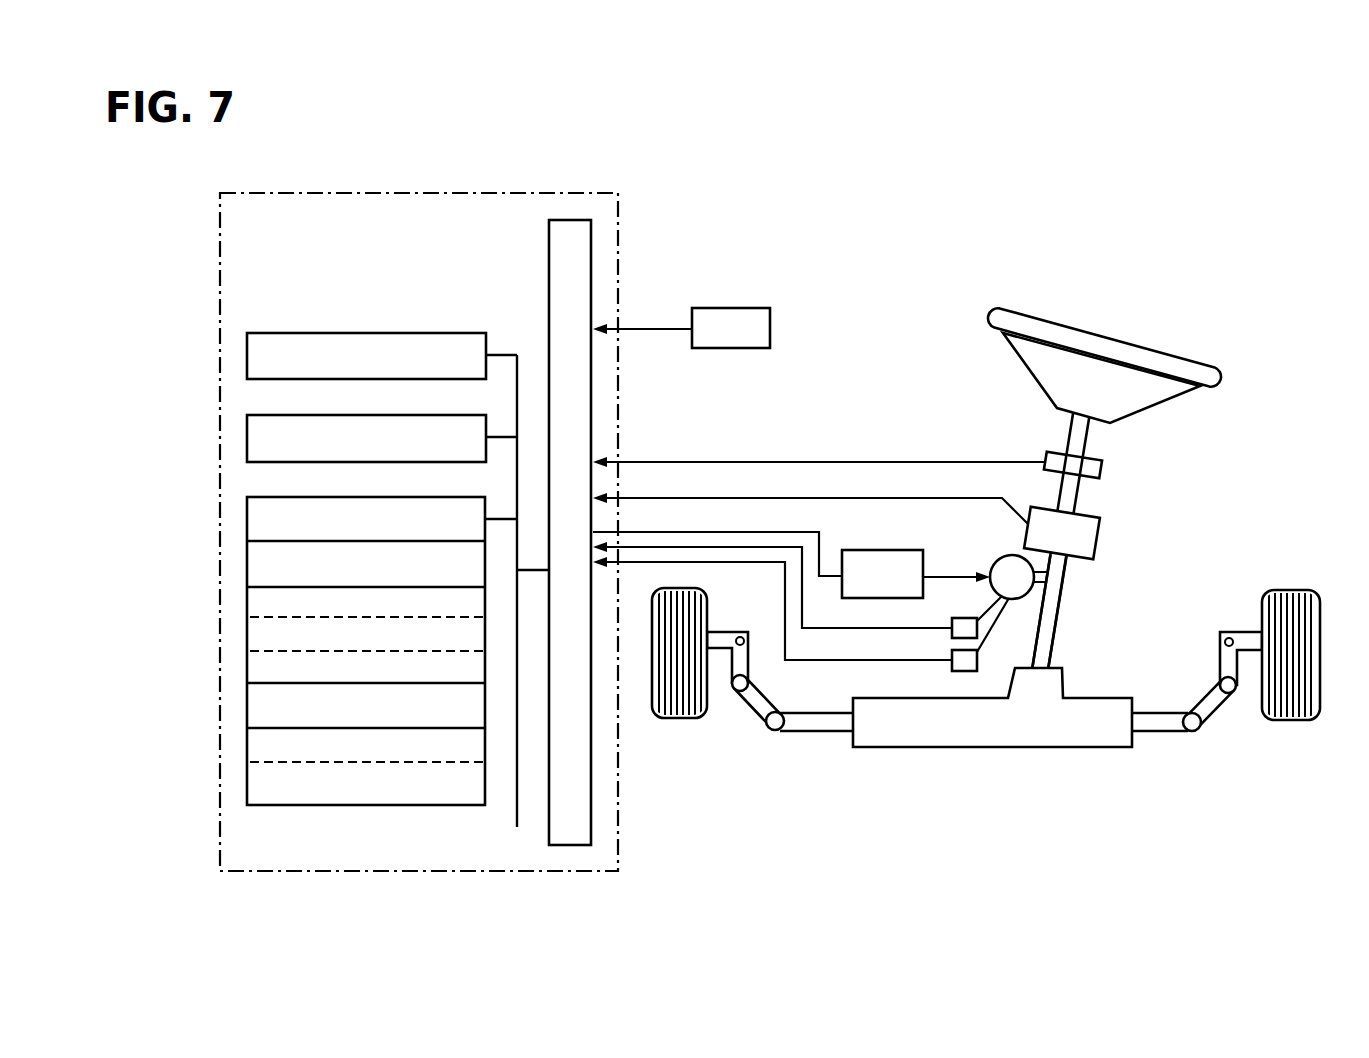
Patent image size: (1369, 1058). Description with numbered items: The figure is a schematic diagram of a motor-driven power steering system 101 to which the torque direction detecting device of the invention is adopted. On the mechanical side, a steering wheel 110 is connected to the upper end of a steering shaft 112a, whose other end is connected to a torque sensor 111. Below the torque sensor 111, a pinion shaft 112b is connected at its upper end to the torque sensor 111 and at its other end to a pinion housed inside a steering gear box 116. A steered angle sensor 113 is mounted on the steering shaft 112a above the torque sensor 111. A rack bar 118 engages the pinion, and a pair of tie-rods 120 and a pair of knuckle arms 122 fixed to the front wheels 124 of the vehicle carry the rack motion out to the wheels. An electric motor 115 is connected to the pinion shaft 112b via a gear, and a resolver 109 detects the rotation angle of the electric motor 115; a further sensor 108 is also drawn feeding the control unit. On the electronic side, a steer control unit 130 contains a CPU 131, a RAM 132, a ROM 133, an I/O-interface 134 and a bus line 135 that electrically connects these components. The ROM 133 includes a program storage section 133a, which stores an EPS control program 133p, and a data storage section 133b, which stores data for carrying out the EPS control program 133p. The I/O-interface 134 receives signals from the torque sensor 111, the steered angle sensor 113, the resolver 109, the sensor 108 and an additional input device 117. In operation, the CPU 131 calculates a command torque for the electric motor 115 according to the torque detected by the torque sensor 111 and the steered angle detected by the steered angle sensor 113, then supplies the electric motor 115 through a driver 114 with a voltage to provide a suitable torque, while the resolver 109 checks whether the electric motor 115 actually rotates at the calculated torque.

The motor-driven power steering system 101 is at (1073, 197).
The vehicle speed sensor 108 is at (962, 670).
The resolver 109 is at (965, 618).
The steering wheel 110 is at (1110, 343).
The torque sensor 111 is at (1100, 534).
The steering shaft 112a is at (1073, 419).
The pinion shaft 112b is at (1048, 675).
The steered angle sensor 113 is at (1102, 469).
The driver 114 is at (872, 550).
The electric motor 115 is at (1000, 558).
The steering gear box 116 is at (1000, 747).
The sensor / input device 117 is at (733, 308).
The rack bar 118 is at (808, 731).
The tie-rods 120 is at (754, 714).
The knuckle arms 122 is at (725, 632).
The steered wheel 124 is at (676, 720).
The steer control unit 130 is at (442, 193).
The CPU 131 is at (444, 333).
The RAM 132 is at (442, 415).
The ROM 133 is at (336, 636).
The program storage section 133a is at (247, 567).
The EPS control program 133p is at (247, 598).
The data storage section 133b is at (247, 707).
The I/O-interface 134 is at (549, 830).
The bus line 135 is at (515, 808).